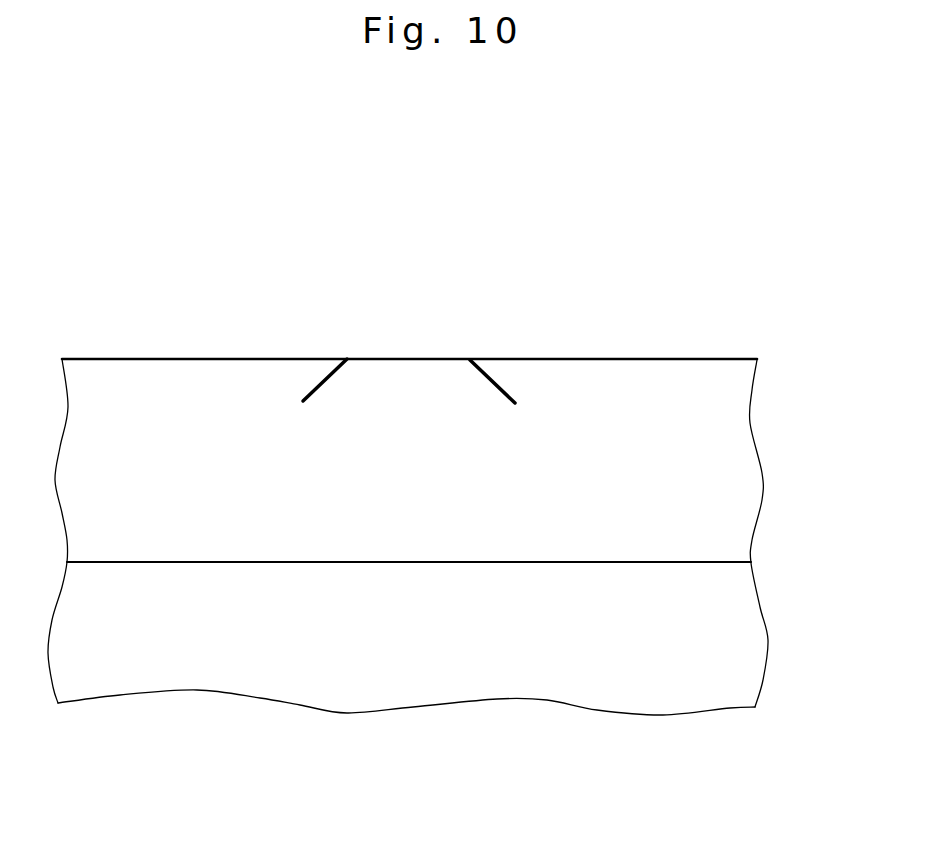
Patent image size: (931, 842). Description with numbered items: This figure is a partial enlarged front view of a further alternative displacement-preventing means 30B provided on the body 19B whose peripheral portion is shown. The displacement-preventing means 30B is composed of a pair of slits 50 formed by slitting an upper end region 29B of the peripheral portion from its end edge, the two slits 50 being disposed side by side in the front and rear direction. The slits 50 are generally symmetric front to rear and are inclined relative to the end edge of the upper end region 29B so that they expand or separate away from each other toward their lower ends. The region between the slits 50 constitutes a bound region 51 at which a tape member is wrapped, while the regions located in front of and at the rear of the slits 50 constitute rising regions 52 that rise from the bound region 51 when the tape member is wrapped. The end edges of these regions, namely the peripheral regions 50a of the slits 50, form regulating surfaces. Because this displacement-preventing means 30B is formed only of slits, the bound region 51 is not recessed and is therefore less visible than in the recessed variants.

The coil end portion 19B is at (657, 277).
The upper end region 29B is at (677, 392).
The displacement-preventing means 30B is at (427, 330).
The bound region 51 is at (392, 385).
The slits 50 is at (335, 365).
The peripheral regions of the slits 50a is at (325, 375).
The rising regions 52 is at (298, 383).